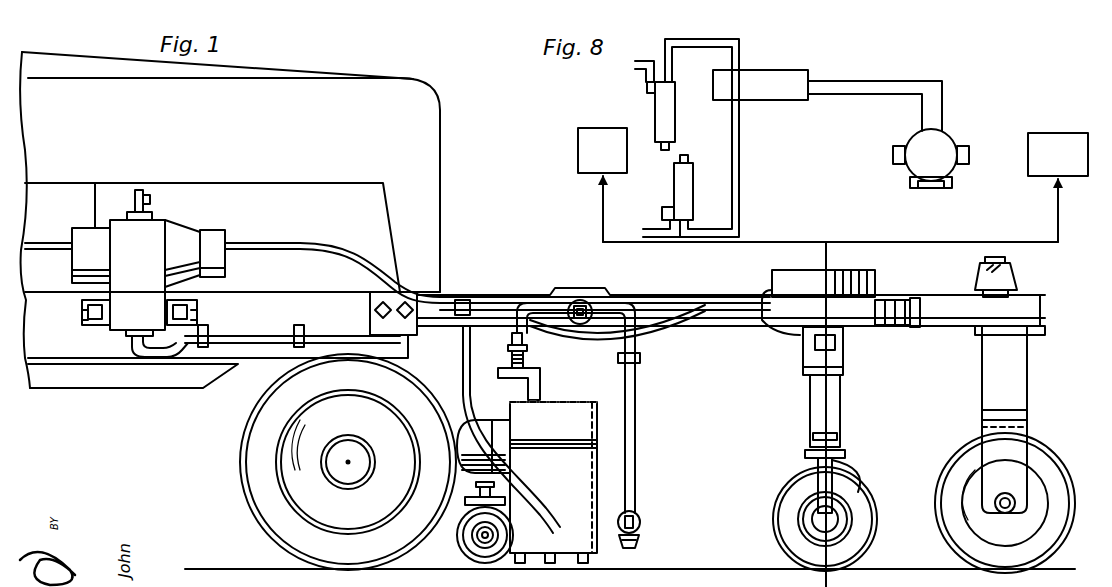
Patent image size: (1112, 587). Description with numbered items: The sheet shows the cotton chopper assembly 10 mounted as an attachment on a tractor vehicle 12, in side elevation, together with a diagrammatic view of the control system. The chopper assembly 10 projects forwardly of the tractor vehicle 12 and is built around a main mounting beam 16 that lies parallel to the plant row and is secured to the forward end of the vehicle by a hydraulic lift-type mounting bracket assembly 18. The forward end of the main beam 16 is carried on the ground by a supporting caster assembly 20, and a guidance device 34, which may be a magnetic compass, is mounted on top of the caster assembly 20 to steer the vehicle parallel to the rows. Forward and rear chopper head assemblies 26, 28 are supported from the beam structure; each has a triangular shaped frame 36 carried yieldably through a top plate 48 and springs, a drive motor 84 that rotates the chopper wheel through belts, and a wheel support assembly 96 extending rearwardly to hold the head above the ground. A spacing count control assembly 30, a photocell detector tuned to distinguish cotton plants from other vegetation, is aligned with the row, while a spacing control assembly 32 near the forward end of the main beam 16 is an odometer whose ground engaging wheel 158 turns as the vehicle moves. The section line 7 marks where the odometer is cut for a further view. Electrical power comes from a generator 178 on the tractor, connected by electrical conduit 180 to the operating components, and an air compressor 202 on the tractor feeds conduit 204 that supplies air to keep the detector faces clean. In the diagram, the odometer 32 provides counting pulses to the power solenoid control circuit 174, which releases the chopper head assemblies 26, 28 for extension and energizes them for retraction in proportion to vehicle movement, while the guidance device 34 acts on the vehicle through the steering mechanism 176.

In FIG. 1, the cotton chopper assembly 10 is at (520, 261).
In FIG. 1, the tractor vehicle 12 is at (274, 101).
In FIG. 1, the main mounting beam 16 is at (653, 305).
In FIG. 1, the hydraulic lift-type mounting bracket assembly 18 is at (396, 297).
In FIG. 1, the supporting caster assembly 20 is at (1022, 377).
In FIG. 1, the chopper head assembly 26 is at (566, 399).
In FIG. 8, the chopper head assembly 26 is at (674, 190).
In FIG. 8, the chopper head assembly 28 is at (655, 112).
In FIG. 1, the spacing count control assembly 30 is at (647, 509).
In FIG. 1, the spacing control assembly 32 is at (847, 397).
In FIG. 8, the spacing control assembly 32 is at (960, 128).
In FIG. 1, the guidance device 34 is at (1022, 282).
In FIG. 8, the guidance device 34 is at (1052, 138).
In FIG. 1, the triangular shaped frame 36 is at (585, 460).
In FIG. 1, the top plate 48 is at (505, 367).
In FIG. 1, the drive motor 84 is at (483, 430).
In FIG. 1, the wheel support assembly 96 is at (500, 565).
In FIG. 1, the ground engaging wheel 158 is at (870, 506).
In FIG. 8, the power solenoid control circuit 174 is at (782, 72).
In FIG. 8, the steering mechanism 176 is at (578, 148).
In FIG. 1, the generator 178 is at (125, 308).
In FIG. 1, the electrical conduit 180 is at (240, 336).
In FIG. 1, the air compressor 202 is at (178, 232).
In FIG. 1, the conduit 204 is at (293, 243).
In FIG. 1, the section line 7- 7 is at (863, 260).